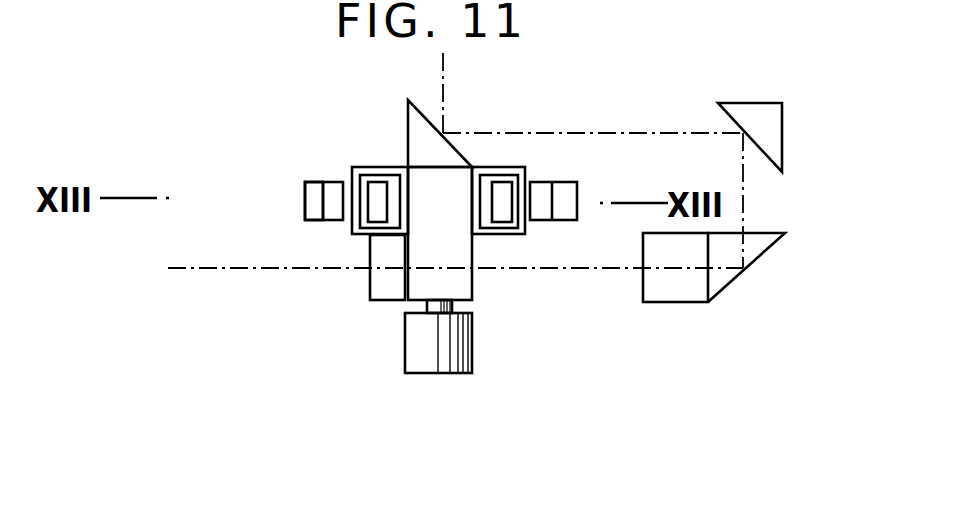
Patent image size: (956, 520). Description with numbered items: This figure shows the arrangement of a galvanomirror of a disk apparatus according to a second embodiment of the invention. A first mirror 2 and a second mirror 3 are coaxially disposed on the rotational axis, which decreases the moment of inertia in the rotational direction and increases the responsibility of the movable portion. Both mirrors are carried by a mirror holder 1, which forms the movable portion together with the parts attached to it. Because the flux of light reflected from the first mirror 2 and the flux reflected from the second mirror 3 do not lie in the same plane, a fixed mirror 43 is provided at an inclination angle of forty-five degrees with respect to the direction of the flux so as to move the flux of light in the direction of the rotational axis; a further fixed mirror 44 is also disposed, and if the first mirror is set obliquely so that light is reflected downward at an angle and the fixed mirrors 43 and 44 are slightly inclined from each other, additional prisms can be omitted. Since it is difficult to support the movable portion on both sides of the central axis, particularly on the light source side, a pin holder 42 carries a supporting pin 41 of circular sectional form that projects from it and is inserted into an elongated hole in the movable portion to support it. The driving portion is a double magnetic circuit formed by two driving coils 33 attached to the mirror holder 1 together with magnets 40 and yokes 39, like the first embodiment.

The mirror holder 1 is at (455, 224).
The first mirror 2 is at (418, 123).
The second mirror 3 is at (380, 283).
The driving coils 33 is at (362, 170).
The yokes 39 is at (307, 203).
The magnets 40 is at (323, 182).
The supporting pin 41 is at (433, 310).
The pin holder 42 is at (455, 347).
The fixed mirror 43 is at (770, 130).
The fixed mirror 44 is at (730, 287).